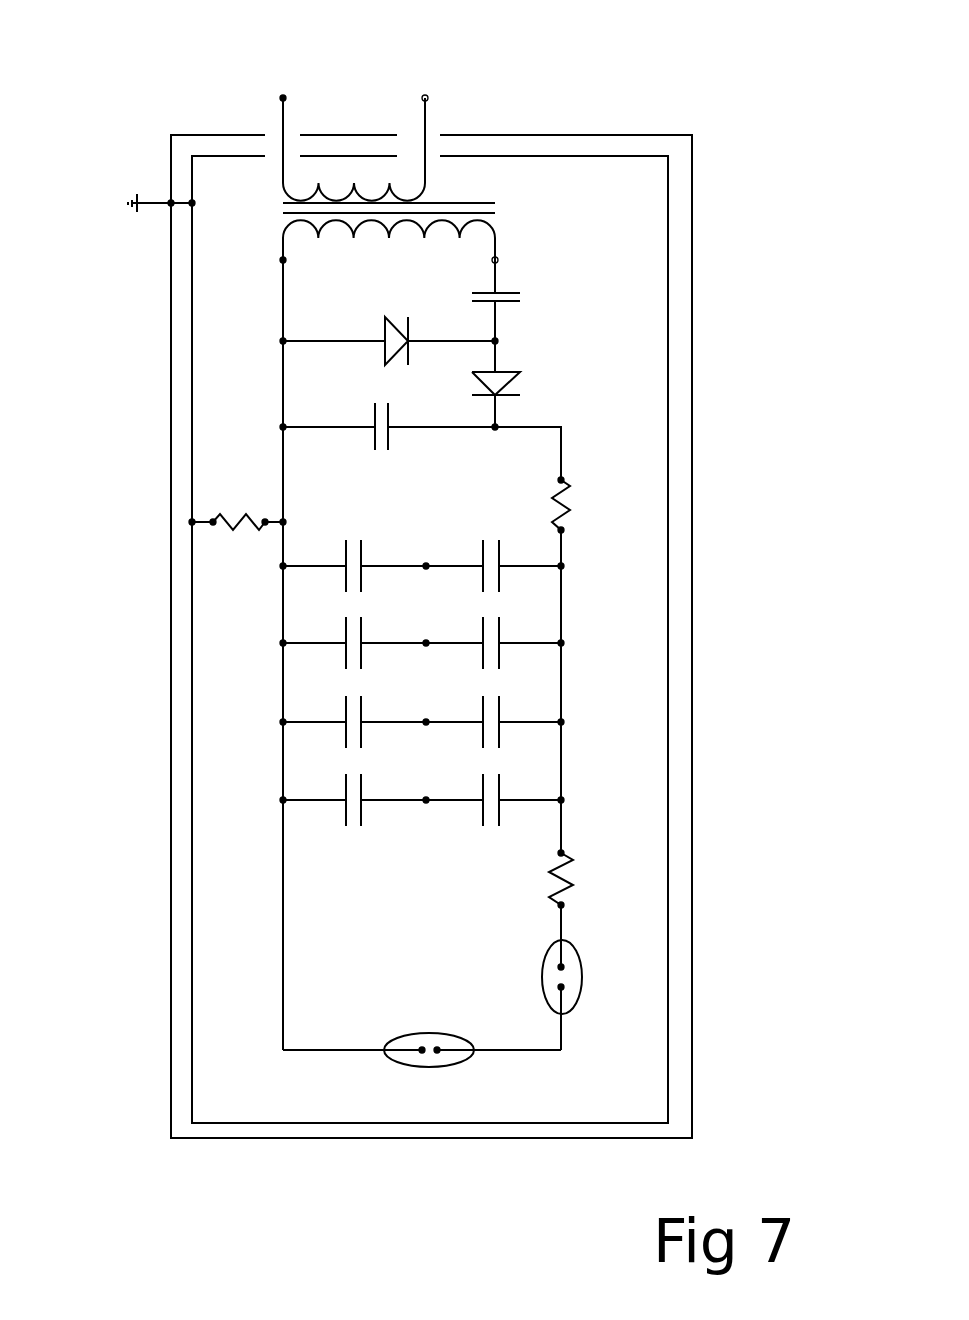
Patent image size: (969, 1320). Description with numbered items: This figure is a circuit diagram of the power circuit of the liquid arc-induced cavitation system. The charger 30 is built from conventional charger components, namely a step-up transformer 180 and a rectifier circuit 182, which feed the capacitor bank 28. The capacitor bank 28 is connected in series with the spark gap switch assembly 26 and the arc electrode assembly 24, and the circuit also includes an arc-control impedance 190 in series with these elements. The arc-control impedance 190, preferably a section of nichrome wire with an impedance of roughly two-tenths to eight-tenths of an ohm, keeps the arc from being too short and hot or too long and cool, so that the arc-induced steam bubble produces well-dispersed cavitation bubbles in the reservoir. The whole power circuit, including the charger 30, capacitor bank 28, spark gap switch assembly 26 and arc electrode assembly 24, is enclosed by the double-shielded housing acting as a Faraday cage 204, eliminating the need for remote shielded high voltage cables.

The arc electrode assembly 24 is at (593, 977).
The spark gap switch assembly 26 is at (423, 1072).
The capacitor bank 28 is at (283, 677).
The charger 30 is at (456, 131).
The step-up transformer 180 is at (432, 180).
The rectifier circuit 182 is at (520, 322).
The arc-control impedance 190 is at (587, 873).
The Faraday cage 204 is at (675, 690).